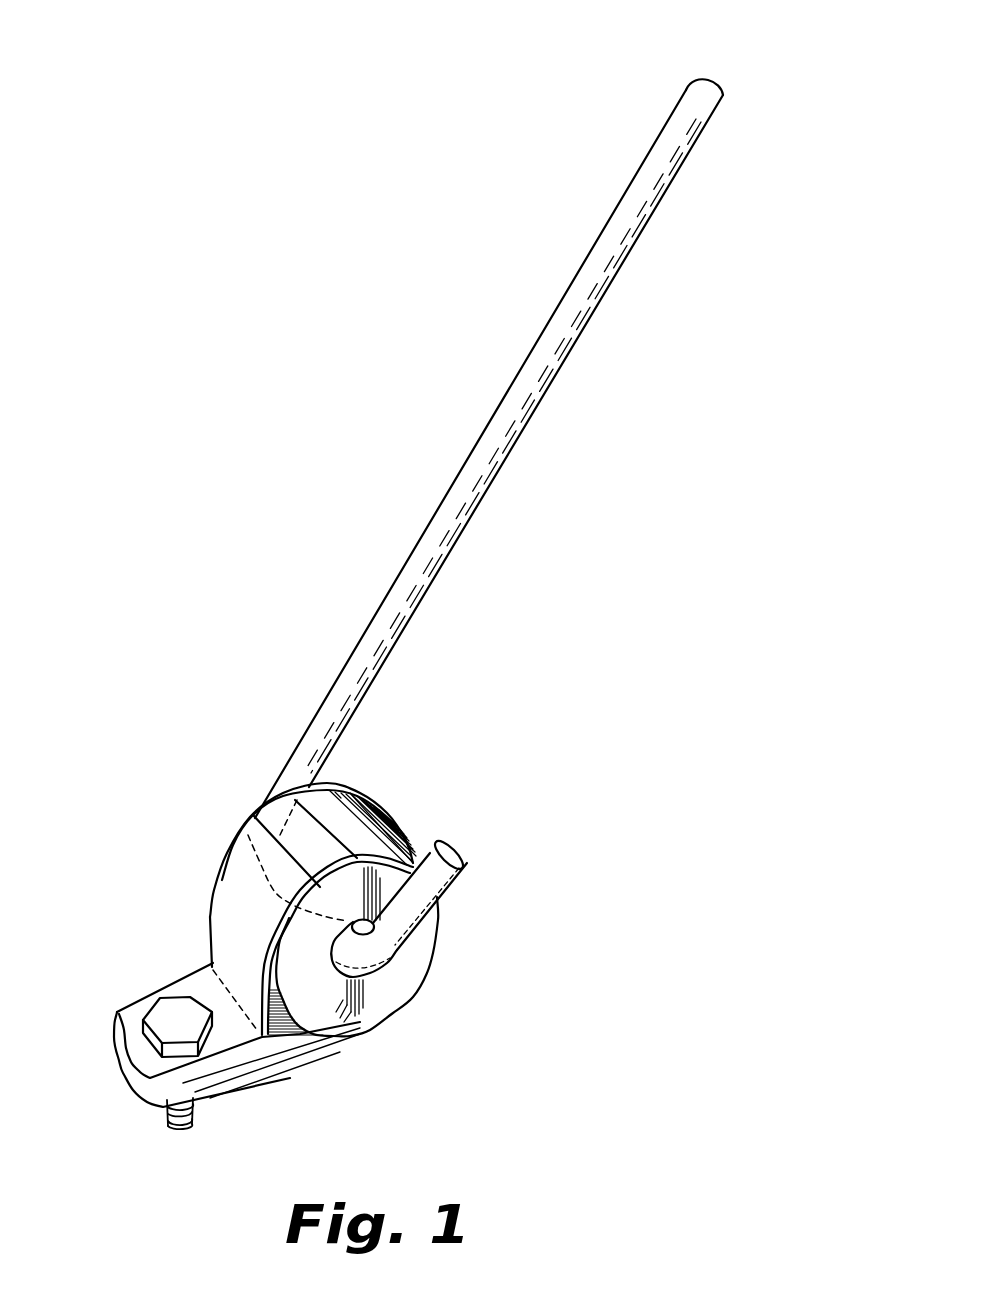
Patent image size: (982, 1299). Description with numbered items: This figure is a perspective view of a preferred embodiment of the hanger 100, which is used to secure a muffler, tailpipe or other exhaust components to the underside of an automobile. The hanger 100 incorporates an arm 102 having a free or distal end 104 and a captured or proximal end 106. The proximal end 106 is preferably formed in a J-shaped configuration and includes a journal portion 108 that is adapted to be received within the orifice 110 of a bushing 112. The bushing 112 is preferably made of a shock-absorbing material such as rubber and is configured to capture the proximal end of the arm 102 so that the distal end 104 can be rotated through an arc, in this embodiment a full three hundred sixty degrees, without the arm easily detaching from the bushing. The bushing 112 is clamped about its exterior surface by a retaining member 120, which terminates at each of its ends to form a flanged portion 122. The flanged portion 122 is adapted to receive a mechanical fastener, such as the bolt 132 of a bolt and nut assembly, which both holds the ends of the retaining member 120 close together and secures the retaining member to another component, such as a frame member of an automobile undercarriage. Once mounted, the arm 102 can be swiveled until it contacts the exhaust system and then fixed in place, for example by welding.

The hanger 100 is at (300, 233).
The arm 102 is at (548, 347).
The distal end 104 is at (662, 105).
The proximal end 106 is at (525, 892).
The journal portion 108 is at (272, 862).
The orifice 110 is at (369, 985).
The bushing 112 is at (365, 989).
The retaining member 120 is at (380, 828).
The flanged portion 122 is at (133, 1016).
The bolt 132 is at (199, 1117).